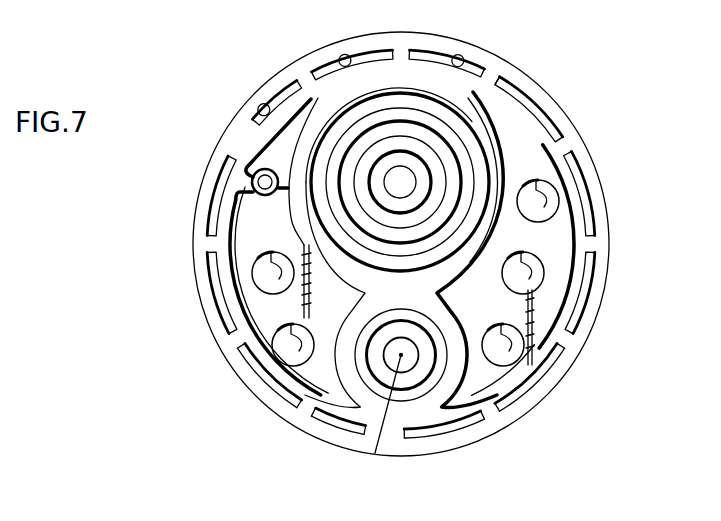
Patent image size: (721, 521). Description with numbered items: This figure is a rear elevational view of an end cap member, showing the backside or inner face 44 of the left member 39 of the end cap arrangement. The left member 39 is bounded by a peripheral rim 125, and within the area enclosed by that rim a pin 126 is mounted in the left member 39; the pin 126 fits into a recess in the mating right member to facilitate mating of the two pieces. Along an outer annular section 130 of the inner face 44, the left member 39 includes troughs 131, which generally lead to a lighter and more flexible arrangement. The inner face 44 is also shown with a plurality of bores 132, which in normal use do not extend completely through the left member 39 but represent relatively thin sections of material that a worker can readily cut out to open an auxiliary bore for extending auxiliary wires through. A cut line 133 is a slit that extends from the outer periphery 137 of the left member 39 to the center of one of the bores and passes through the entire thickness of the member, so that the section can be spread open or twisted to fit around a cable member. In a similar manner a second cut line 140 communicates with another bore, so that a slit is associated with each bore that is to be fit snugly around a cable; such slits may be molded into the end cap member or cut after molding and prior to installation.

The left member 39 is at (515, 65).
The inner face 44 is at (335, 305).
The peripheral rim 125 is at (565, 117).
The pin 126 is at (262, 194).
The outer annular section 130 is at (290, 73).
The troughs 131 is at (350, 52).
The bores 132 is at (272, 252).
The cut line 133 is at (400, 182).
The outer periphery 137 is at (200, 195).
The cut line 140 is at (377, 440).